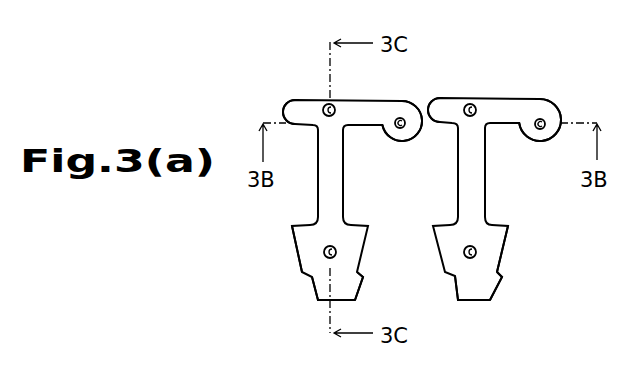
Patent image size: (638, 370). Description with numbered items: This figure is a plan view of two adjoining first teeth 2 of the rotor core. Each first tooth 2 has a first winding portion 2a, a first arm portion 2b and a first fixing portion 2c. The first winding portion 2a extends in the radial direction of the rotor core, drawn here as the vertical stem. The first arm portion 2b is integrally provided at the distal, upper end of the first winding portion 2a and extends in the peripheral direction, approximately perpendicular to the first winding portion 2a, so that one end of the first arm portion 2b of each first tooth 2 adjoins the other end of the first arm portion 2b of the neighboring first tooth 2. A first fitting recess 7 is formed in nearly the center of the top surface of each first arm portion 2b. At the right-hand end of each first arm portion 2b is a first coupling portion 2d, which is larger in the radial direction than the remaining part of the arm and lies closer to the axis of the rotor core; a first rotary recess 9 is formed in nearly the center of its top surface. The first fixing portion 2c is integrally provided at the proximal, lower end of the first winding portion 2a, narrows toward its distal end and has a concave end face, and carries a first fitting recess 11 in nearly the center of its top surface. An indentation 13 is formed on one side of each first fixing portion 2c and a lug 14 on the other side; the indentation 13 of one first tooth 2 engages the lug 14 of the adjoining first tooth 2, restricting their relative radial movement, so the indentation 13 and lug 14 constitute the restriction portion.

The first tooth 2 is at (306, 64).
The first winding portion 2a is at (460, 178).
The first arm portion 2b is at (292, 111).
The first fixing portion 2c is at (302, 240).
The first coupling portion 2d is at (420, 90).
The first fitting recess 7 is at (333, 106).
The first rotary recess 9 is at (398, 118).
The first fitting recess 11 is at (465, 250).
The indentation 13 is at (316, 288).
The lug 14 is at (360, 295).